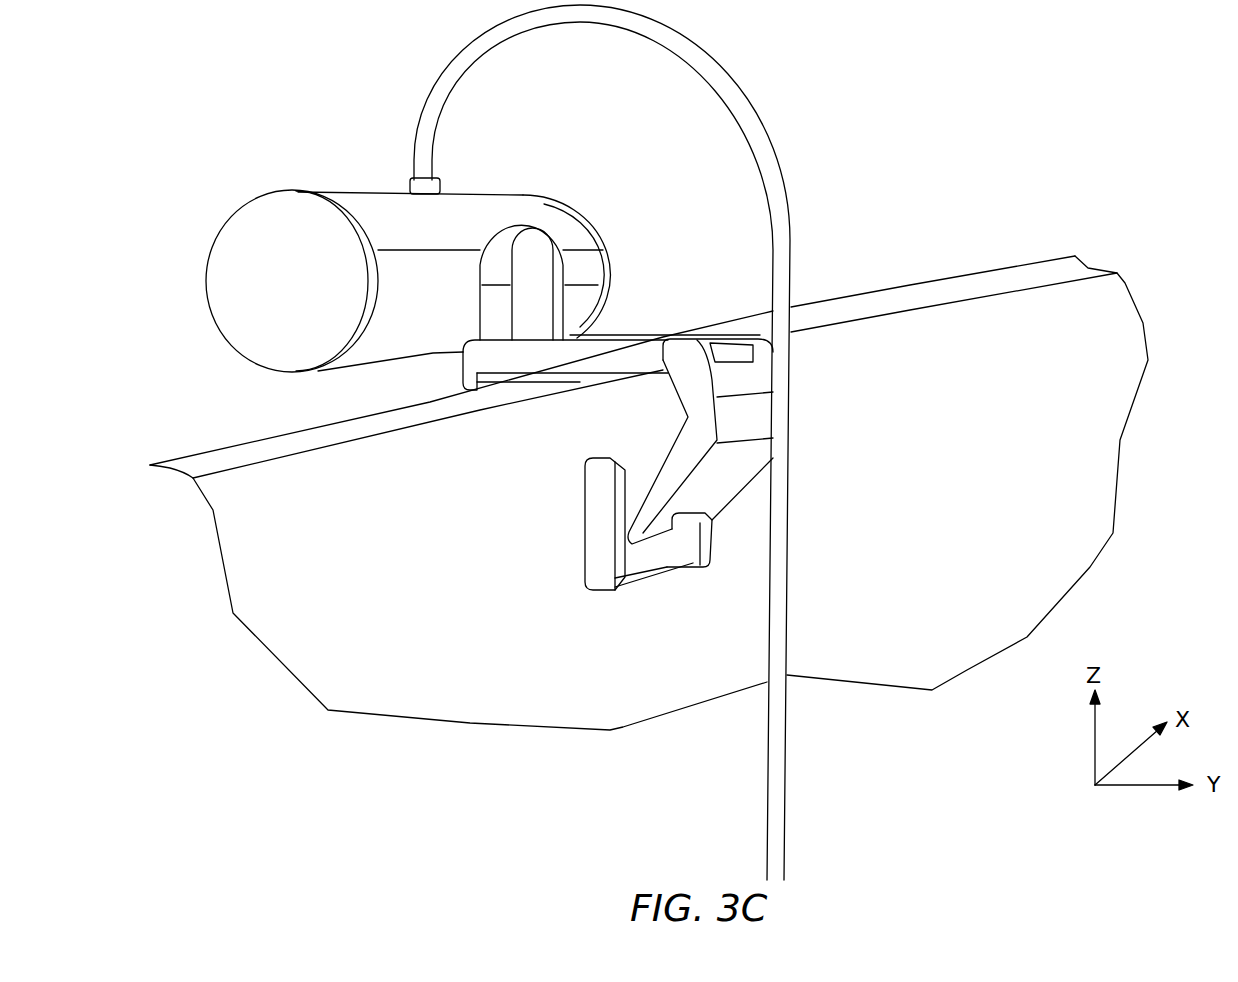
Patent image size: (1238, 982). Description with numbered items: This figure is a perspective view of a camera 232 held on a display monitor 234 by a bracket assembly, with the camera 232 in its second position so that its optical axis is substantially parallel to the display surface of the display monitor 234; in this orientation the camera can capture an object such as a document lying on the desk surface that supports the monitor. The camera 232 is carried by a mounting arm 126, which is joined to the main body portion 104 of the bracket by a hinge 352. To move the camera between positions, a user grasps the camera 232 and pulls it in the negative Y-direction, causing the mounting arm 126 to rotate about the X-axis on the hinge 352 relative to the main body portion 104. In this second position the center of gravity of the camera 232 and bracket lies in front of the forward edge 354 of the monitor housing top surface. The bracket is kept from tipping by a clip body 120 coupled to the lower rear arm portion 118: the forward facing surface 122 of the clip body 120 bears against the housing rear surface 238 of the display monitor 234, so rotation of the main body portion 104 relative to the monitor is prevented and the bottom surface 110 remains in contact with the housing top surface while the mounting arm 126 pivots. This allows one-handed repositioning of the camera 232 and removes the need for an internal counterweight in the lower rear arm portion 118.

The main body portion 104 is at (667, 340).
The bottom surface 110 is at (570, 375).
The lower rear arm portion 118 is at (665, 548).
The clip body 120 is at (597, 558).
The forward facing surface 122 is at (583, 520).
The mounting arm 126 is at (548, 310).
The camera 232 is at (377, 200).
The display monitor 234 is at (940, 203).
The housing rear surface 238 is at (1032, 553).
The hinge 352 is at (543, 313).
The forward edge 354 is at (820, 302).